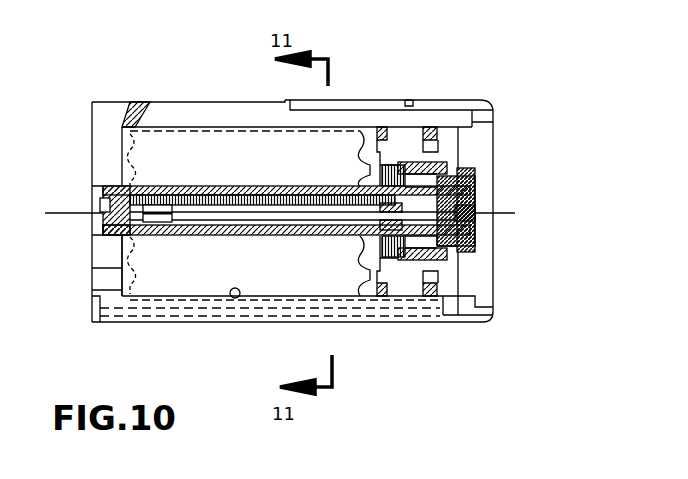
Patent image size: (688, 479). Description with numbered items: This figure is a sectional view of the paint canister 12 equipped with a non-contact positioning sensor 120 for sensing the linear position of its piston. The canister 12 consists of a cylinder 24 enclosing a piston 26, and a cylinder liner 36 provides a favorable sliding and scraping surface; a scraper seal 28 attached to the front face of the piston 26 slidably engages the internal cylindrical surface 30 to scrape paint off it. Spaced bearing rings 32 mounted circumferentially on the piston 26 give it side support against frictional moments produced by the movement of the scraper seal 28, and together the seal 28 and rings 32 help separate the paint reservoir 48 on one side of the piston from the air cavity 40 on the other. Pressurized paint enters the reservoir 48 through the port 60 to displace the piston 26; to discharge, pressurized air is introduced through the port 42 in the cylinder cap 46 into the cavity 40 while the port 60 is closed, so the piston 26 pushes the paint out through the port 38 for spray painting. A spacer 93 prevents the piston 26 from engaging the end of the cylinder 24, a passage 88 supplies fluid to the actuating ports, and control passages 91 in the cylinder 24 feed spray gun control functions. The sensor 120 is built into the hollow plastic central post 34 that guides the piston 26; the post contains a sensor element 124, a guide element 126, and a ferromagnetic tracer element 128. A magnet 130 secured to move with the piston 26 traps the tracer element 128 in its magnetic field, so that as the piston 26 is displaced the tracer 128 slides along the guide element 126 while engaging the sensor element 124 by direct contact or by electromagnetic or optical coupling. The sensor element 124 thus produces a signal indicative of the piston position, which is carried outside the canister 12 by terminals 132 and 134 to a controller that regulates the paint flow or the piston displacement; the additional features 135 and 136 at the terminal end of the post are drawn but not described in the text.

The canister 12 is at (404, 92).
The cylinder 24 is at (183, 100).
The piston 26 is at (408, 285).
The scraper seal 28 is at (358, 160).
The internal cylindrical surface 30 is at (237, 300).
The bearing rings 32 is at (384, 100).
The central post 34 is at (197, 187).
The cylinder liner 36 is at (160, 298).
The port 38 is at (92, 284).
The cavity 40 is at (450, 278).
The port 42 is at (447, 298).
The cylinder cap 46 is at (482, 168).
The reservoir 48 is at (276, 300).
The port 60 is at (134, 102).
The passage 88 is at (455, 100).
The control passages 91 is at (108, 323).
The spacer 93 is at (448, 166).
The non-contact positioning sensor 120 is at (250, 130).
The sensor element 124 is at (290, 190).
The guide element 126 is at (225, 200).
The tracer element 128 is at (395, 215).
The magnet 130 is at (400, 297).
The terminal 132 is at (103, 200).
The terminal 134 is at (103, 224).
The lower end portion 135 is at (103, 232).
The gear hub 136 is at (474, 233).